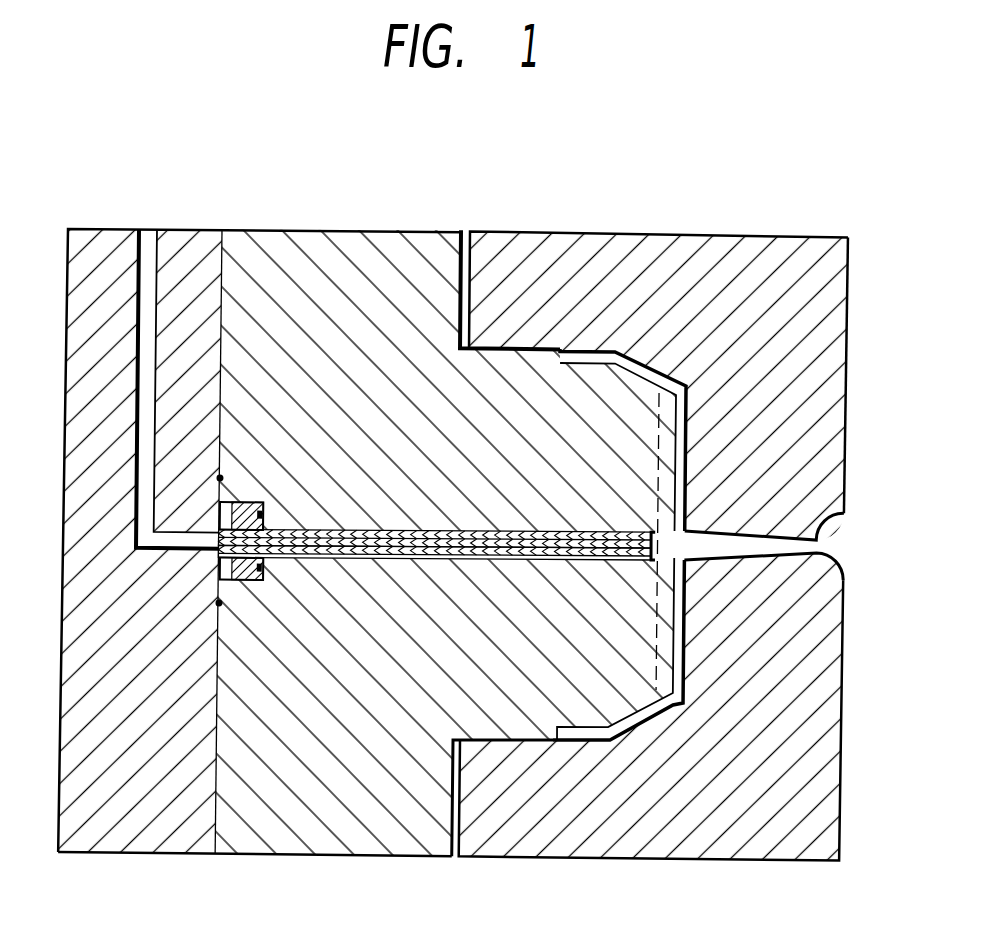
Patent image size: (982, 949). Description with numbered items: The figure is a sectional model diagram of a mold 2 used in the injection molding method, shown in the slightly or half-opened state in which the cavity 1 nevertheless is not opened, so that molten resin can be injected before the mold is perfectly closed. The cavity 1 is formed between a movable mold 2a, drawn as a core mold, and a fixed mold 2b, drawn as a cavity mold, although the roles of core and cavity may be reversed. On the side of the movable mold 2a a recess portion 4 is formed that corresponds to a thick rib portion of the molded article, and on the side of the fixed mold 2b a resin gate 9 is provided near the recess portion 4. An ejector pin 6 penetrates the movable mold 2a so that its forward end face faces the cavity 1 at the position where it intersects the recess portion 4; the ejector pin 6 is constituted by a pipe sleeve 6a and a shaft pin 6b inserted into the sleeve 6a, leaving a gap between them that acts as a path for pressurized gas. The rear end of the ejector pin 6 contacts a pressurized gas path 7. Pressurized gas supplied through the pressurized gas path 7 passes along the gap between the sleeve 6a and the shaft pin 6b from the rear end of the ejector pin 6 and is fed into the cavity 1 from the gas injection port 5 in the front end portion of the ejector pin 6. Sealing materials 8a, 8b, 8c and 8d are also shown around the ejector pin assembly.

The cavity 1 is at (685, 442).
The mold 2 is at (532, 484).
The movable mold 2a is at (416, 262).
The fixed mold 2b is at (659, 257).
The recess portion 4 is at (666, 684).
The gas injection port 5 is at (657, 560).
The ejector pin 6 is at (434, 608).
The pipe sleeve 6a is at (346, 557).
The shaft pin 6b is at (326, 633).
The pressurized gas path 7 is at (153, 245).
The sealing material 8a is at (263, 512).
The sealing material 8b is at (264, 569).
The sealing material 8c is at (223, 475).
The sealing material 8d is at (224, 602).
The resin gate 9 is at (739, 546).